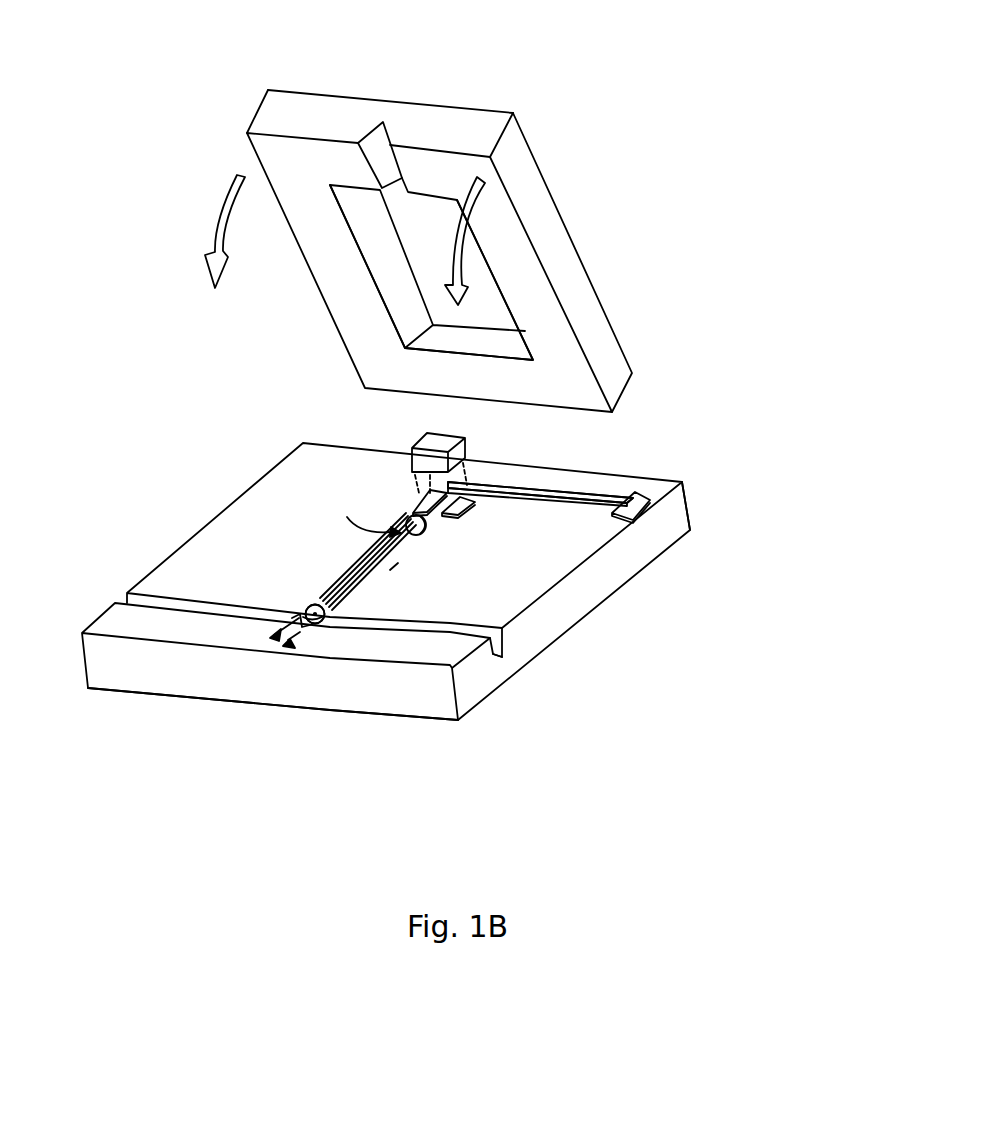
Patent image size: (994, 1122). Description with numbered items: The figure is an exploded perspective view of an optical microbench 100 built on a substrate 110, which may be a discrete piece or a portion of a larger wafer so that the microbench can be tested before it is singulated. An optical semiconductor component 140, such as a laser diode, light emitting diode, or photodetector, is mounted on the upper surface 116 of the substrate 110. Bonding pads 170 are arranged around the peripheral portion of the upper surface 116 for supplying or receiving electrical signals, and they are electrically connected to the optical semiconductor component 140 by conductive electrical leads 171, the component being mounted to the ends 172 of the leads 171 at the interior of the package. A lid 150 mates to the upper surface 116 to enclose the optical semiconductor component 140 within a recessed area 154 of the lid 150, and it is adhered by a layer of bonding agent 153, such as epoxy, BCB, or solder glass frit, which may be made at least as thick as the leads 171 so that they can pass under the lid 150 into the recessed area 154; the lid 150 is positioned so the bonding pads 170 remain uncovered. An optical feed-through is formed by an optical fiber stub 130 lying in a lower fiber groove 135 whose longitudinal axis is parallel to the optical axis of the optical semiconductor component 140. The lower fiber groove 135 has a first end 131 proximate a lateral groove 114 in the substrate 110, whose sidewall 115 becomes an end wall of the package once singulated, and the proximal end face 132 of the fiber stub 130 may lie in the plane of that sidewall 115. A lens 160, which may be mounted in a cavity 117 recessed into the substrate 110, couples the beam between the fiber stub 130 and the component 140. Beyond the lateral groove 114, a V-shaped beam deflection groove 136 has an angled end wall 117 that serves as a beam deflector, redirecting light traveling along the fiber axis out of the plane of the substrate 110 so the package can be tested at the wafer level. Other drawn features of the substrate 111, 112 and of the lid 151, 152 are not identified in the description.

The optical microbench 100 is at (124, 372).
The substrate 110 is at (650, 548).
The front wall of base 111 is at (441, 703).
The side wall of base 112 is at (690, 495).
The lateral groove 114 is at (157, 606).
The sidewall 115 is at (505, 652).
The upper surface 116 is at (498, 610).
The end wall 117 is at (247, 670).
The optical fiber stub 130 is at (345, 588).
The first end 131 is at (295, 618).
The proximal end face 132 is at (318, 608).
The lower fiber groove 135 is at (395, 558).
The beam deflection groove 136 is at (303, 617).
The optical semiconductor component 140 is at (462, 430).
The lid 150 is at (562, 258).
The top edge of lid 151 is at (297, 110).
The bottom corner of lid 152 is at (618, 408).
The bonding agent 153 is at (378, 142).
The recessed area 154 is at (481, 312).
The lens 160 is at (430, 525).
The bonding pads 170 is at (645, 483).
The conductive electrical leads 171 is at (537, 485).
The ends of leads 172 is at (412, 500).